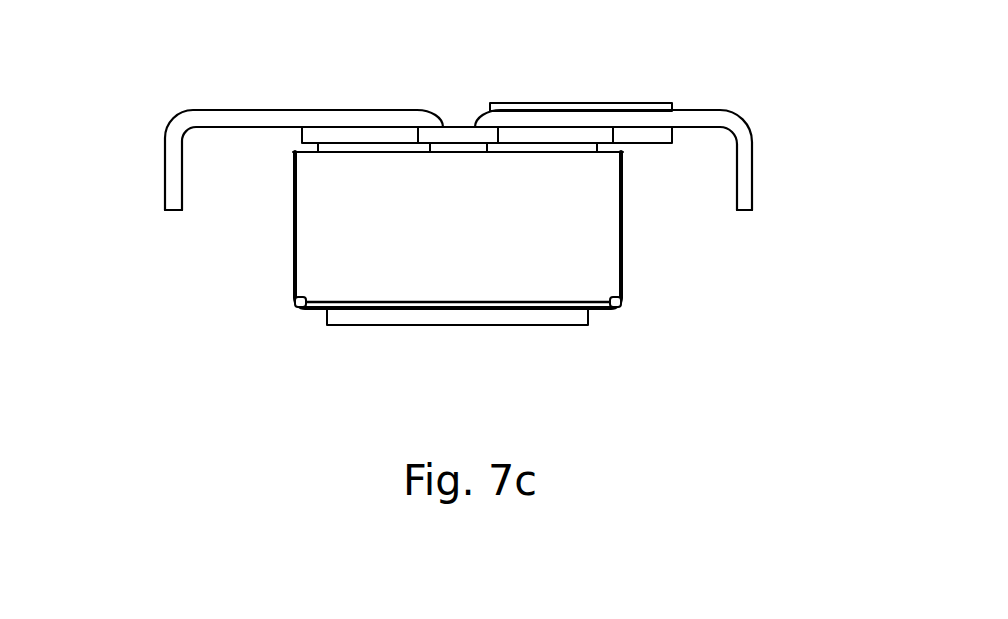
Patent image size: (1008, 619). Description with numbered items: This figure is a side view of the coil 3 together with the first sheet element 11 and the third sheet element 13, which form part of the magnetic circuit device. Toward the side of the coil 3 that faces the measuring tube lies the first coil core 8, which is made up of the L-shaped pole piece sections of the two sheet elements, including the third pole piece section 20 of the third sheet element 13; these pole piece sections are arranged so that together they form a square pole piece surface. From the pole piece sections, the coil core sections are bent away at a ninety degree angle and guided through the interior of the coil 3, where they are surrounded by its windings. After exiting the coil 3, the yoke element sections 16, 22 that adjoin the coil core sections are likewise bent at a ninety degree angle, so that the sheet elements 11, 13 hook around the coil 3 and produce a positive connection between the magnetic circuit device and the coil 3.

The coil 3 is at (602, 247).
The first coil core 8 is at (397, 327).
The first sheet element 11 is at (165, 182).
The third sheet element 13 is at (753, 182).
The yoke element section 16 is at (258, 117).
The third pole piece section 20 is at (555, 317).
The yoke element section 22 is at (700, 120).